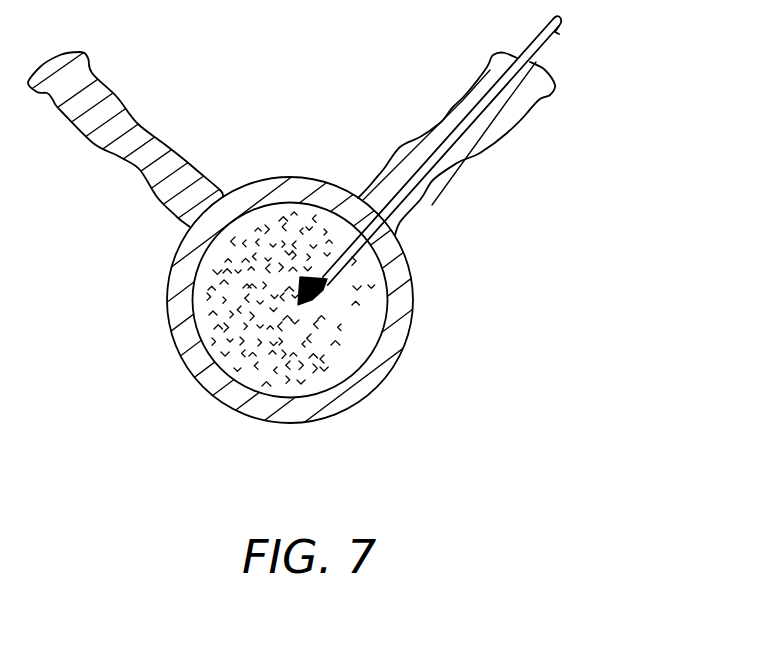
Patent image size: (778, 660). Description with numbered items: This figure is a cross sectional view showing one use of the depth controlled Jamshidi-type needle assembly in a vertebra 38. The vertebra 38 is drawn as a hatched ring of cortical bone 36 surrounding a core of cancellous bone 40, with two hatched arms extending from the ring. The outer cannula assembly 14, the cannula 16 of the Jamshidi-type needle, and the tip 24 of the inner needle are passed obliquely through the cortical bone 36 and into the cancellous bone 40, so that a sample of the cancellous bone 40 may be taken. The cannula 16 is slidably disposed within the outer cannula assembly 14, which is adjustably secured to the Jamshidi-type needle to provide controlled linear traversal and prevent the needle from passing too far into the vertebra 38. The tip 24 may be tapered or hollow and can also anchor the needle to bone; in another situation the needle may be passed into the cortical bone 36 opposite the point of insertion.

The outer cannula assembly 14 is at (545, 43).
The cannula 16 is at (350, 260).
The conical tip 24 is at (326, 299).
The cortical bone 36 is at (403, 278).
The vertebra 38 is at (290, 145).
The cancellous bone 40 is at (210, 350).